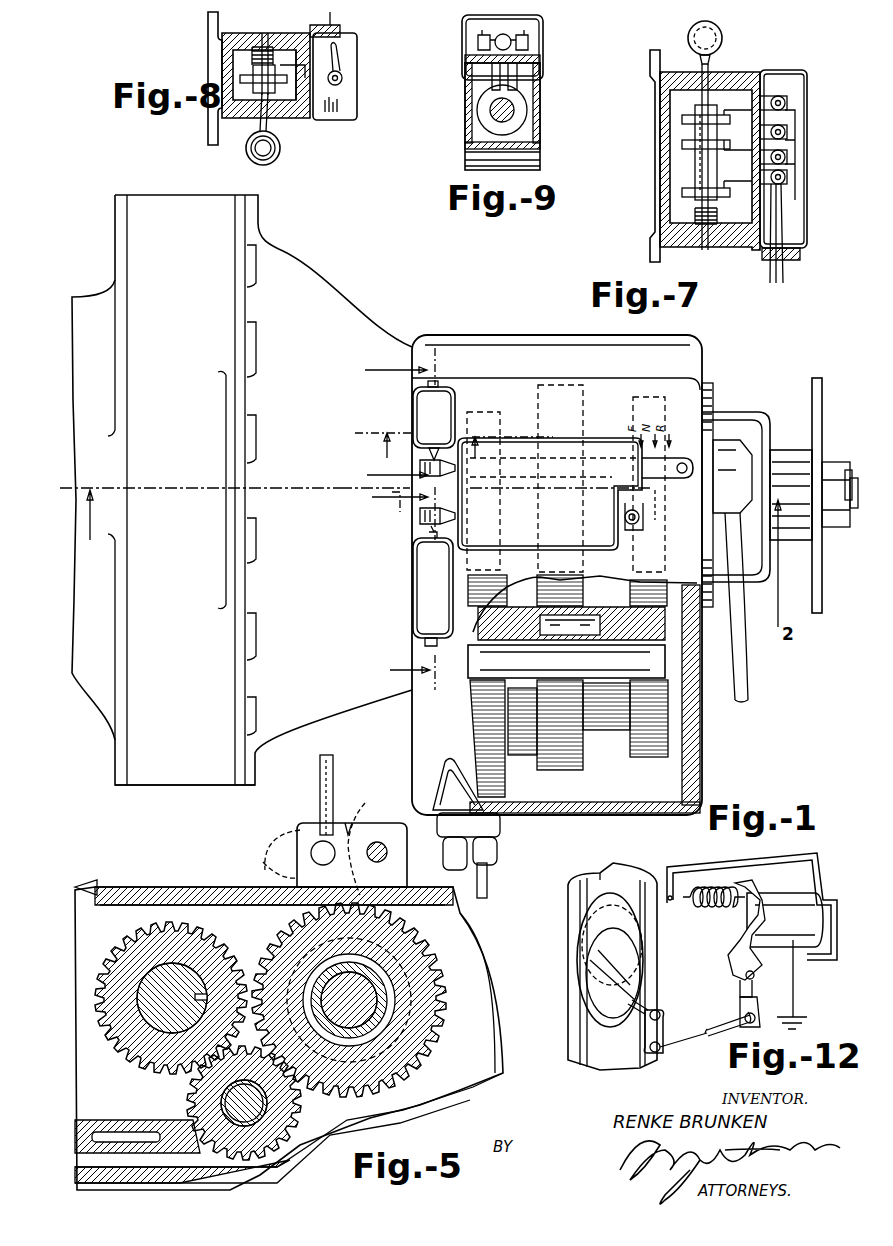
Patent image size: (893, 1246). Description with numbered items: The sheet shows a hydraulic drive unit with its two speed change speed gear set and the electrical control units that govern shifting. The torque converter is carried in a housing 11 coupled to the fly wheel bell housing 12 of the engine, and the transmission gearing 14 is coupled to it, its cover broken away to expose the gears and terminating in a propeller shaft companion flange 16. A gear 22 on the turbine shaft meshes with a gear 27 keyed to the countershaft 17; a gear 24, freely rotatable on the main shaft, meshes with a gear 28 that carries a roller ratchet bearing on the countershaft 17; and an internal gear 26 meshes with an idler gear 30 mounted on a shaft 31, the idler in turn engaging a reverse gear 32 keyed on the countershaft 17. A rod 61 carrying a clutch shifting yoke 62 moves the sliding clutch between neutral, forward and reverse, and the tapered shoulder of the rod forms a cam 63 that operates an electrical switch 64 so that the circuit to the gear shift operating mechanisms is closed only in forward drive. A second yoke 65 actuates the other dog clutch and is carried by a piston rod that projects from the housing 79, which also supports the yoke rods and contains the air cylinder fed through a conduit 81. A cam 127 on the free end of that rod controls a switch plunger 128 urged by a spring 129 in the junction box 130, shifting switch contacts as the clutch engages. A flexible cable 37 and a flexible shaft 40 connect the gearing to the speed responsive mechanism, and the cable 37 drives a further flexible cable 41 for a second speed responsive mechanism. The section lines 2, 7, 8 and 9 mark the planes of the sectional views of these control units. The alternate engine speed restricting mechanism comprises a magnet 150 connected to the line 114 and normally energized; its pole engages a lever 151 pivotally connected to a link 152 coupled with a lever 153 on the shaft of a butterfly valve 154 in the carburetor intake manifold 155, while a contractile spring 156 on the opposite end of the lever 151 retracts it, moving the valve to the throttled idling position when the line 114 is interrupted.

In FIG. 1, the housing 11 is at (297, 278).
In FIG. 1, the fly wheel bell housing 12 is at (132, 788).
In FIG. 1, the transmission gearing 14 is at (705, 357).
In FIG. 5, the transmission gearing 14 is at (480, 997).
In FIG. 1, the propeller shaft companion flange 16 is at (810, 570).
In FIG. 1, the countershaft 17 is at (647, 666).
In FIG. 5, the countershaft 17 is at (142, 983).
In FIG. 1, the gear 22 is at (485, 412).
In FIG. 1, the gear 24 is at (540, 385).
In FIG. 1, the internal gear 26 is at (634, 397).
In FIG. 5, the internal gear 26 is at (440, 1020).
In FIG. 1, the gear 27 is at (503, 782).
In FIG. 1, the gear 28 is at (567, 772).
In FIG. 5, the idler gear 30 is at (243, 1103).
In FIG. 5, the shaft 31 is at (193, 1088).
In FIG. 1, the reverse gear 32 is at (640, 760).
In FIG. 5, the reverse gear 32 is at (200, 930).
In FIG. 1, the flexible cable 37 is at (490, 880).
In FIG. 1, the flexible shaft 40 is at (740, 683).
In FIG. 1, the flexible cable 41 is at (467, 858).
In FIG. 1, the rod 61 is at (648, 475).
In FIG. 5, the rod 61 is at (377, 864).
In FIG. 5, the clutch shifting yoke 62 is at (364, 841).
In FIG. 8, the cam 63 is at (282, 143).
In FIG. 1, the cam 63 is at (422, 468).
In FIG. 8, the electrical switch 64 is at (227, 63).
In FIG. 9, the electrical switch 64 is at (467, 97).
In FIG. 1, the electrical switch 64 is at (428, 418).
In FIG. 5, the yoke 65 is at (269, 854).
In FIG. 1, the housing 79 is at (567, 448).
In FIG. 5, the housing 79 is at (300, 835).
In FIG. 1, the conduit 81 is at (634, 525).
In FIG. 5, the conduit 81 is at (320, 797).
In FIG. 12, the line 114 is at (830, 1003).
In FIG. 7, the cam 127 is at (730, 33).
In FIG. 1, the cam 127 is at (420, 517).
In FIG. 7, the switch plunger 128 is at (700, 163).
In FIG. 7, the spring 129 is at (703, 210).
In FIG. 7, the junction box 130 is at (665, 145).
In FIG. 12, the magnet 150 is at (748, 975).
In FIG. 12, the lever 151 is at (743, 883).
In FIG. 12, the link 152 is at (690, 1033).
In FIG. 12, the lever 153 is at (660, 1017).
In FIG. 12, the butterfly valve 154 is at (582, 930).
In FIG. 12, the carburetor intake manifold 155 is at (617, 1058).
In FIG. 12, the contractile spring 156 is at (693, 912).
In FIG. 1, the section line 2- 2 is at (91, 527).
In FIG. 1, the section line 7- 7 is at (396, 588).
In FIG. 1, the section line 8- 8 is at (400, 444).
In FIG. 1, the section line 9- 9 is at (454, 447).